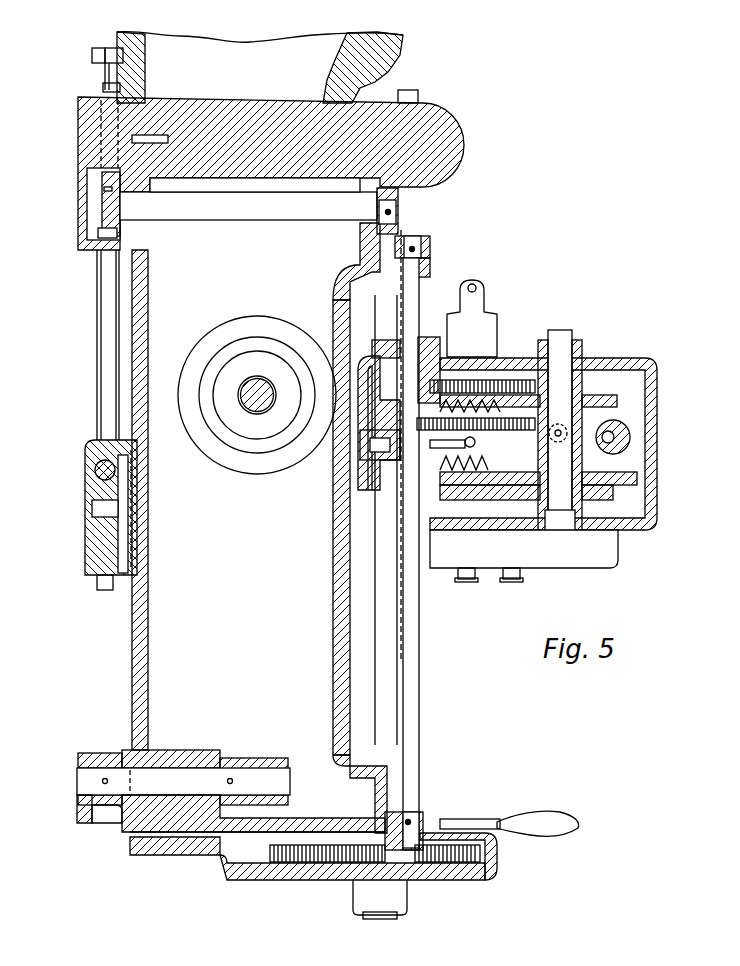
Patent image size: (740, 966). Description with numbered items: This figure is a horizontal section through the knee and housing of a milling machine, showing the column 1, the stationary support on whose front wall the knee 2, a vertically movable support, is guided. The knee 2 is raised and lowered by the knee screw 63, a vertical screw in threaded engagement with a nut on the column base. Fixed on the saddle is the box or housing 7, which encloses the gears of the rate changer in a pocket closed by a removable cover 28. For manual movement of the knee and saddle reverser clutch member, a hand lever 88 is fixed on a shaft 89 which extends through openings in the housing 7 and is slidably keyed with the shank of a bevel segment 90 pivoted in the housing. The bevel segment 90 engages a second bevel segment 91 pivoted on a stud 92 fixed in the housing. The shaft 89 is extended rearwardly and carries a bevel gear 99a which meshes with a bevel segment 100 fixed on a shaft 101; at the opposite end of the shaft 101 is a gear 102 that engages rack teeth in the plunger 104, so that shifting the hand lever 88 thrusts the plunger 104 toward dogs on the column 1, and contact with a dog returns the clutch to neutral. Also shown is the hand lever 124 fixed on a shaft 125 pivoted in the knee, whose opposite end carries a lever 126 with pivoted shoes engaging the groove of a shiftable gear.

The column 1 is at (397, 56).
The knee 2 is at (423, 183).
The housing 7 is at (515, 357).
The cover 28 is at (566, 569).
The knee screw 63 is at (258, 412).
The hand lever 88 is at (562, 820).
The shaft 89 is at (413, 802).
The bevel segment 90 is at (428, 334).
The bevel segment 91 is at (360, 430).
The stud 92 is at (340, 482).
The bevel gear 99a is at (427, 246).
The bevel segment 100 is at (398, 229).
The shaft 101 is at (317, 221).
The gear 102 is at (93, 254).
The plunger 104 is at (101, 332).
The hand lever 124 is at (83, 823).
The shaft 125 is at (82, 780).
The lever 126 is at (237, 762).